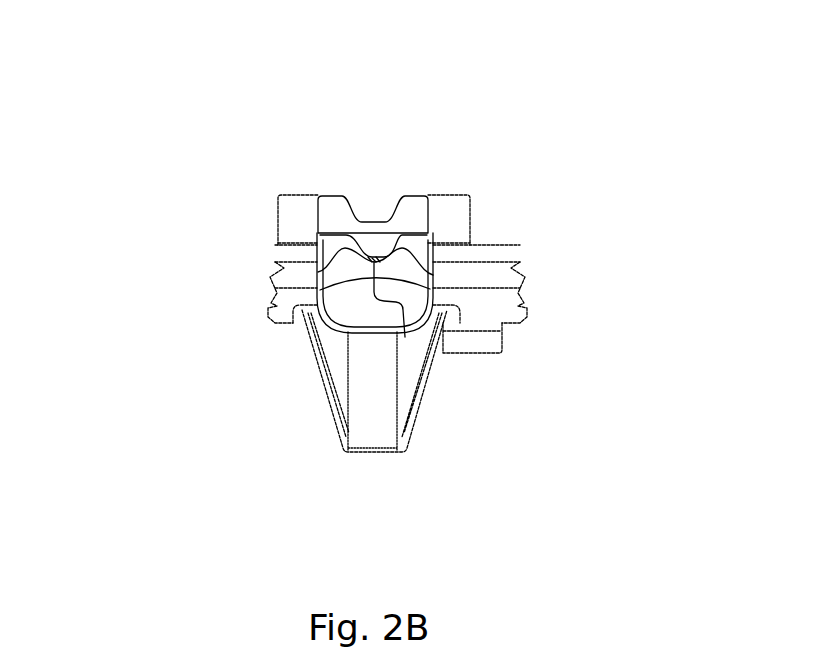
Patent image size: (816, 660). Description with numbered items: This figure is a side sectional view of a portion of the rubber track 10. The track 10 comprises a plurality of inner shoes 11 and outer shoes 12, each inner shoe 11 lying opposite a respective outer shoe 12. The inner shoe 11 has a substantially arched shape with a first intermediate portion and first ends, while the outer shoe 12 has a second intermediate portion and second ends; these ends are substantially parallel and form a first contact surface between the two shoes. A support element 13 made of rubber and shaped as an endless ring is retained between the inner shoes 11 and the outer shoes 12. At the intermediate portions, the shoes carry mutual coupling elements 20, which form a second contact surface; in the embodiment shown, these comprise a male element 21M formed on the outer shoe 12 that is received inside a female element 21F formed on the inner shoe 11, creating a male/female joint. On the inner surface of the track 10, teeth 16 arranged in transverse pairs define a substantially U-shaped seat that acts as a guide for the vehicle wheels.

The track 10 is at (166, 88).
The inner shoe 11 is at (318, 288).
The outer shoe 12 is at (333, 213).
The support element 13 is at (498, 283).
The teeth 16 is at (345, 402).
The coupling elements 20 is at (375, 240).
The male element 21M is at (425, 247).
The female element 21F is at (405, 337).